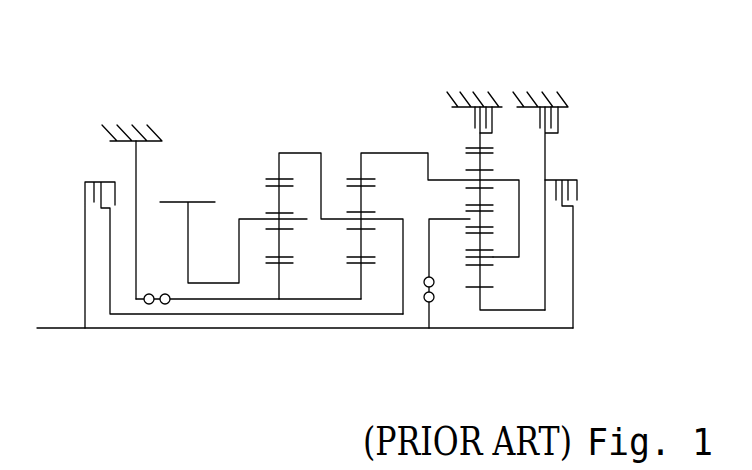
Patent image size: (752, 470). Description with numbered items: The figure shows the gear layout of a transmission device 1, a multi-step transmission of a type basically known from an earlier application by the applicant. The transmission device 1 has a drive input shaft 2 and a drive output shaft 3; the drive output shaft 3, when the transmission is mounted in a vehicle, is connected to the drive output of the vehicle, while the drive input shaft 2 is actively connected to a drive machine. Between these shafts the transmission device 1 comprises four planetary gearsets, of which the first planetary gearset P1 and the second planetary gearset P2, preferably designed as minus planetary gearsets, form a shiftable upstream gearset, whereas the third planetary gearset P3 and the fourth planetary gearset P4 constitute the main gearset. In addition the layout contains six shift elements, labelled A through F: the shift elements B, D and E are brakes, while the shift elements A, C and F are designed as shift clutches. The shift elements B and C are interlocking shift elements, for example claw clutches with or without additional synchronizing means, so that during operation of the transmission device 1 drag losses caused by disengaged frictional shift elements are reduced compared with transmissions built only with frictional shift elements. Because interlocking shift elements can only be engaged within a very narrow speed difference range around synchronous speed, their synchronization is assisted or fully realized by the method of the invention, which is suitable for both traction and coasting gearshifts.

The transmission device 1 is at (88, 108).
The drive input shaft 2 is at (70, 382).
The drive output shaft 3 is at (188, 248).
The shift element A is at (244, 240).
The shift element B is at (182, 380).
The shift element C is at (410, 378).
The shift element D is at (474, 117).
The shift element E is at (540, 201).
The shift element F is at (568, 252).
The first planetary gearset P1 is at (522, 377).
The second planetary gearset P2 is at (458, 165).
The third planetary gearset P3 is at (346, 198).
The fourth planetary gearset P4 is at (295, 380).